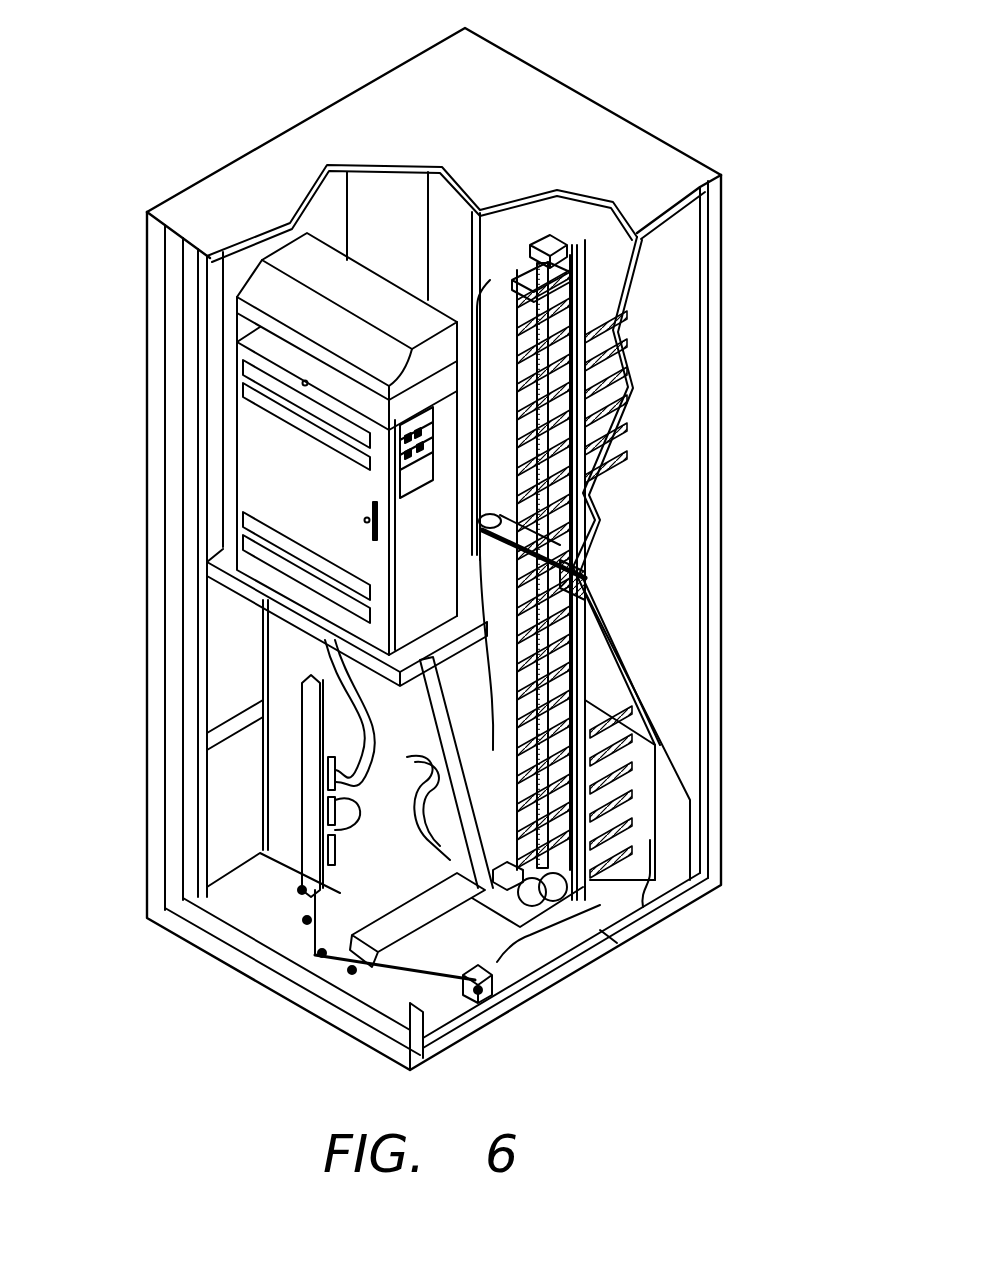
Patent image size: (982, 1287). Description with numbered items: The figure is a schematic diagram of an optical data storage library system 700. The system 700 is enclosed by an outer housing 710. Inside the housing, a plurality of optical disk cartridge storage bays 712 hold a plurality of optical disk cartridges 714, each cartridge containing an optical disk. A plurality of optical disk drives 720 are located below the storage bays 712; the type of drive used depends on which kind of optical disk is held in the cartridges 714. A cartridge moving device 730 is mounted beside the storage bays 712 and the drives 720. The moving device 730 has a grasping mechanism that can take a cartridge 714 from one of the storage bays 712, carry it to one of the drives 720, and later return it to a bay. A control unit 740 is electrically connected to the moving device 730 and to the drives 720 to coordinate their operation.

The optical data storage library system 700 is at (572, 1066).
The outer housing 710 is at (387, 73).
The optical disk cartridge storage bays 712 is at (463, 513).
The optical disk cartridges 714 is at (515, 284).
The optical disk drives 720 is at (677, 872).
The cartridge moving device 730 is at (596, 512).
The control unit 740 is at (272, 507).